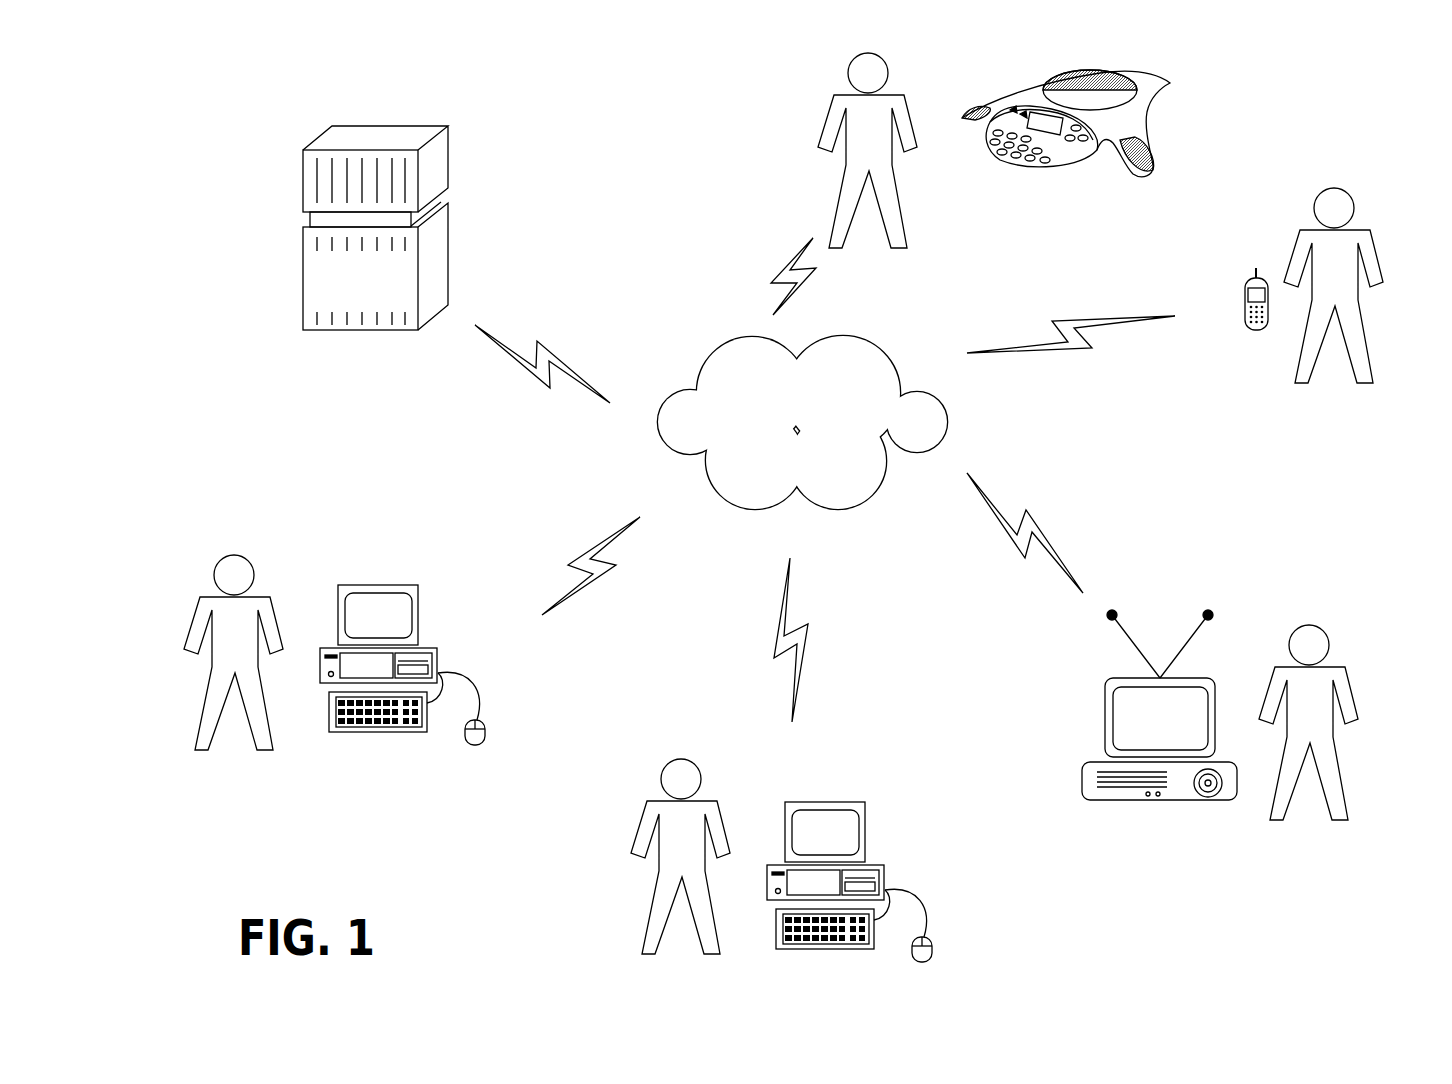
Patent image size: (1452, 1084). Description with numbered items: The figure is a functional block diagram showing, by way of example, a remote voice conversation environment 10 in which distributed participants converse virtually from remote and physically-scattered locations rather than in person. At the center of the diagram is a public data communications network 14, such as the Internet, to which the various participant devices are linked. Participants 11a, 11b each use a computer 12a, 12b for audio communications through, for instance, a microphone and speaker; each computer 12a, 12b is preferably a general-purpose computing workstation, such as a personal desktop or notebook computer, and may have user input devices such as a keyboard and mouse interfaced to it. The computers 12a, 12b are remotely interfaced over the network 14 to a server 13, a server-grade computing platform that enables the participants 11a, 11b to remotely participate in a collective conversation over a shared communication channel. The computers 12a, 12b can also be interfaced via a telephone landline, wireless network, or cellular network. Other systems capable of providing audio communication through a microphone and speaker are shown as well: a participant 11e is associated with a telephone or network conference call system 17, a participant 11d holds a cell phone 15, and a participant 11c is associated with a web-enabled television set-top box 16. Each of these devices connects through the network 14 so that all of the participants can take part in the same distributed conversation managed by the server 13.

The remote voice conversation environment 10 is at (222, 130).
The participant 11a is at (200, 714).
The participant 11b is at (645, 920).
The participant 11c is at (1343, 778).
The participant 11d is at (1370, 342).
The participant 11e is at (907, 221).
The computer 12a is at (378, 585).
The computer 12b is at (833, 803).
The server 13 is at (449, 158).
The public data communications network 14 is at (721, 347).
The cell phone 15 is at (1243, 287).
The web-enabled television set-top box 16 is at (1103, 722).
The telephone or network conference call system 17 is at (1168, 82).